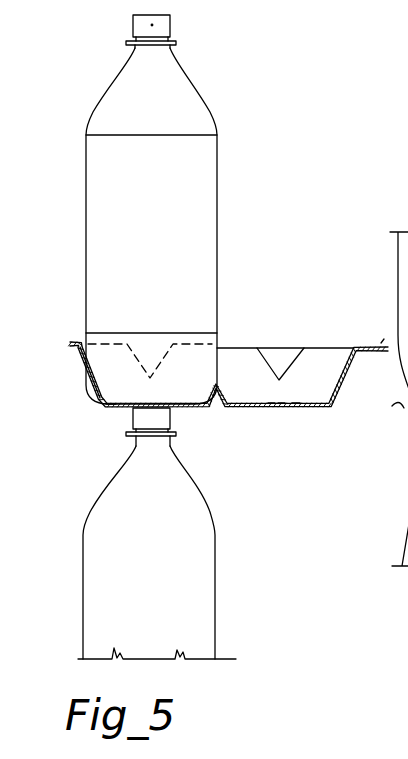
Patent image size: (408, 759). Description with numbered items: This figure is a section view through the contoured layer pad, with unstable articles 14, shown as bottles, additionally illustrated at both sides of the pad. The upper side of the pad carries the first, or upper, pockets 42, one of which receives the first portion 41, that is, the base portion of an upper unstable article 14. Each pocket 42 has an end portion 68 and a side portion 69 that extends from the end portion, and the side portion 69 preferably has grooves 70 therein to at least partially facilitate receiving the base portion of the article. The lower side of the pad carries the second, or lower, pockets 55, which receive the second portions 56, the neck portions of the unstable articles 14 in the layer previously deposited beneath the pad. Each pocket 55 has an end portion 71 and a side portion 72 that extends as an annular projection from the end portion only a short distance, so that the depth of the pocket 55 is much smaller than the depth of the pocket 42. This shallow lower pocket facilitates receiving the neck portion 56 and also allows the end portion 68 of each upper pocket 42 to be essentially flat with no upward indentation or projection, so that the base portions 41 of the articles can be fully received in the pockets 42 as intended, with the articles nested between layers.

The unstable article 14 is at (190, 213).
The second portion 56 is at (173, 43).
The first portion 41 is at (98, 399).
The pocket 42 is at (331, 362).
The end portion 68 is at (116, 398).
The side portion 69 is at (98, 398).
The grooves 70 is at (268, 367).
The pocket 55 is at (272, 410).
The end portion 71 is at (281, 410).
The side portion 72 is at (297, 410).